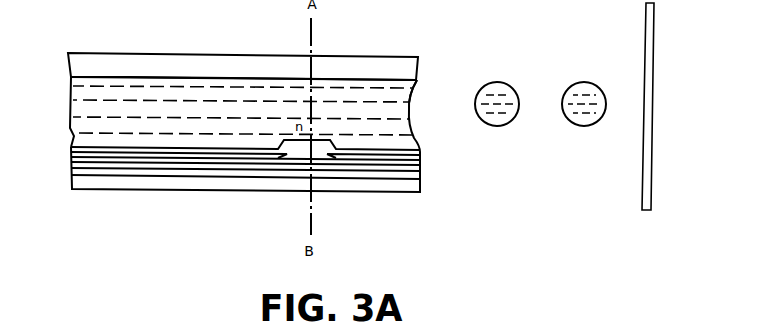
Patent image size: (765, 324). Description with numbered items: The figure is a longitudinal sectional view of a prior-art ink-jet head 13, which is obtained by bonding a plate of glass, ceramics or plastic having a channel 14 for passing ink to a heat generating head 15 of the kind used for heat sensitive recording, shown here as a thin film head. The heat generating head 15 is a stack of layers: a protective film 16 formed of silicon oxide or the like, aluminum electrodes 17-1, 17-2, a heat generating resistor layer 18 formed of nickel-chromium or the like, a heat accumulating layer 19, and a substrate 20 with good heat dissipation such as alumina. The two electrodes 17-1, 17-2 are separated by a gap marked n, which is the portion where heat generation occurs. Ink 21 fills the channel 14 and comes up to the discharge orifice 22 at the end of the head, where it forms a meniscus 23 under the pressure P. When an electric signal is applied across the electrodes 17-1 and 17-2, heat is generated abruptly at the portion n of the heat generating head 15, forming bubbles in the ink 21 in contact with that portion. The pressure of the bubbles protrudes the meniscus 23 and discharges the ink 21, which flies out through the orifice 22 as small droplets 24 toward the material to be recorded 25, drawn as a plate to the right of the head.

The head 13 is at (197, 53).
The channel 14 is at (252, 77).
The heat generating head 15 is at (58, 145).
The protective film 16 is at (97, 148).
The aluminum electrode 17-1 is at (162, 157).
The aluminum electrode 17-2 is at (385, 163).
The heat generating resistor layer 18 is at (219, 165).
The heat accumulating layer 19 is at (263, 170).
The substrate 20 is at (348, 188).
The ink 21 is at (105, 85).
The discharge orifice 22 is at (421, 123).
The meniscus 23 is at (411, 116).
The small droplets 24 is at (470, 77).
The material to be recorded 25 is at (646, 62).